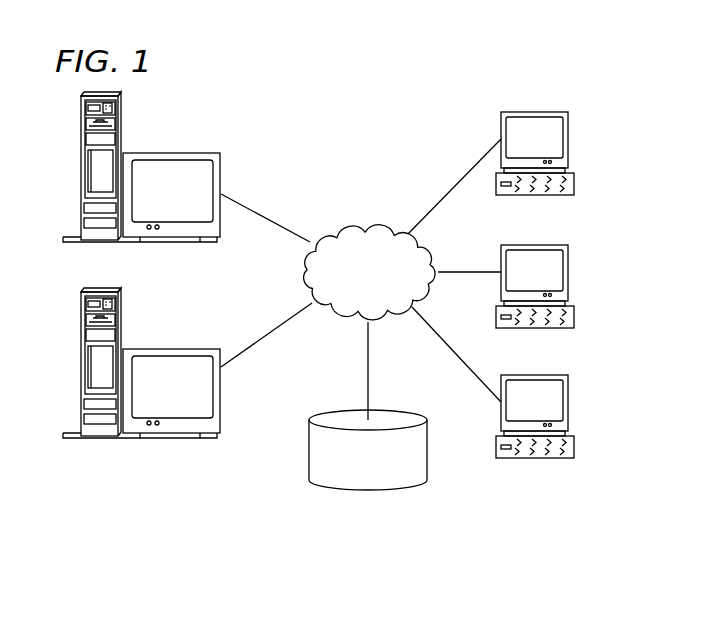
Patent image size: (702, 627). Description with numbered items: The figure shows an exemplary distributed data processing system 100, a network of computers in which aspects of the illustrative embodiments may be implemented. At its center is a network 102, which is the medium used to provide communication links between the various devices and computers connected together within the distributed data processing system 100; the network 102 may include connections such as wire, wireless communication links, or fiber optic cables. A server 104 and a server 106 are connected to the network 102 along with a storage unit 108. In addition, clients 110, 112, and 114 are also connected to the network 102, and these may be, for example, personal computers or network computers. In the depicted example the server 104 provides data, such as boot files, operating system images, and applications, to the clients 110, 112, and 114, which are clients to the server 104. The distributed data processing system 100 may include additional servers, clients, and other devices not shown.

The distributed data processing system 100 is at (416, 119).
The network 102 is at (342, 227).
The server 104 is at (80, 167).
The server 106 is at (81, 363).
The storage unit 108 is at (352, 490).
The client 110 is at (569, 139).
The client 112 is at (569, 274).
The client 114 is at (569, 403).